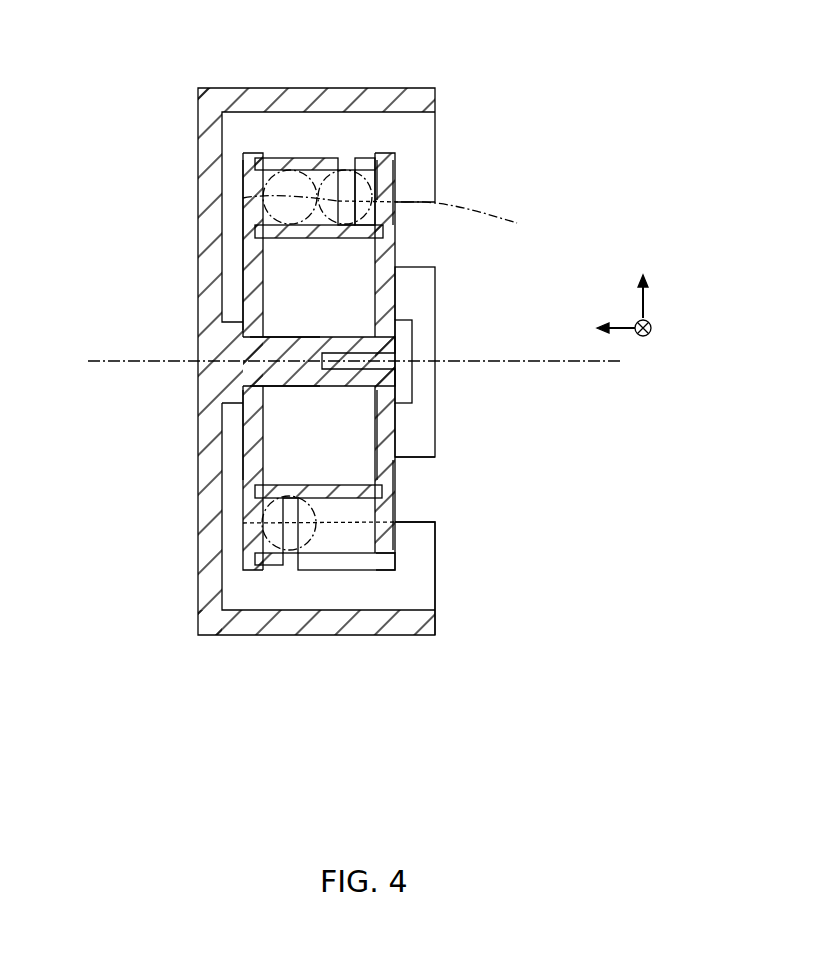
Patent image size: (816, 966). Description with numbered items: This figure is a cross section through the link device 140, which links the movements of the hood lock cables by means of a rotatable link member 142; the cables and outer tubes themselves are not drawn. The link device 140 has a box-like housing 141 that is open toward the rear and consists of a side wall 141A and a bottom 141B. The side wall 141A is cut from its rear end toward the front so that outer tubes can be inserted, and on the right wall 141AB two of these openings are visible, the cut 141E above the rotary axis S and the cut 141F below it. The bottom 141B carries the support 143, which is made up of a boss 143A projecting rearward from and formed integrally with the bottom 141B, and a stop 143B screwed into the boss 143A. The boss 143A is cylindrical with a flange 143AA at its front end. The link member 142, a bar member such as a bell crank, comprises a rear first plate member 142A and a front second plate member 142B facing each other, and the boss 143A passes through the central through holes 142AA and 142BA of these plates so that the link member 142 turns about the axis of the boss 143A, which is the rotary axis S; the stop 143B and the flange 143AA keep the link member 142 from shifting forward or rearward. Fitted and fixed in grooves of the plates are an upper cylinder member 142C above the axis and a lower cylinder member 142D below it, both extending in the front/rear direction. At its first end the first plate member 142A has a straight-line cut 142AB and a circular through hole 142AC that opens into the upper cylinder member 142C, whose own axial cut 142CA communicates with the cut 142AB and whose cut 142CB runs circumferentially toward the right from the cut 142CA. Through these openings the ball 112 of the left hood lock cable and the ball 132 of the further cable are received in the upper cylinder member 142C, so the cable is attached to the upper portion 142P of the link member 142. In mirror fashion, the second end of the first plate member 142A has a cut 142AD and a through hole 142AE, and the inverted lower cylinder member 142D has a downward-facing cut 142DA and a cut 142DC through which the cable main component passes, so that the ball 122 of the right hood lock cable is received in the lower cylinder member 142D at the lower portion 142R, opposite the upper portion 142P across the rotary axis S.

The link device 140 is at (490, 72).
The housing 141 is at (177, 655).
The side wall 141A is at (237, 643).
The bottom 141B is at (208, 125).
The right wall 141AB is at (427, 582).
The cut 141E is at (418, 266).
The cut 141F is at (424, 458).
The link member 142 is at (235, 585).
The first plate member 142A is at (390, 303).
The through hole 142AA is at (389, 381).
The cut 142AB is at (391, 162).
The through hole 142AC is at (387, 183).
The through hole 142AE is at (386, 506).
The cut 142AD is at (393, 561).
The second plate member 142B is at (247, 282).
The through hole 142BA is at (247, 378).
The upper portion 142P is at (287, 142).
The cut 142CA is at (300, 167).
The cut 142CB is at (350, 165).
The upper cylinder member 142C is at (368, 147).
The lower cylinder member 142D is at (363, 580).
The cut 142DA is at (332, 562).
The cut 142DC is at (292, 537).
The lower portion 142R is at (282, 578).
The support 143 is at (422, 353).
The boss 143A is at (262, 356).
The flange 143AA is at (238, 394).
The stop 143B is at (405, 333).
The ball 112 is at (243, 198).
The ball 122 is at (243, 523).
The ball 132 is at (399, 218).